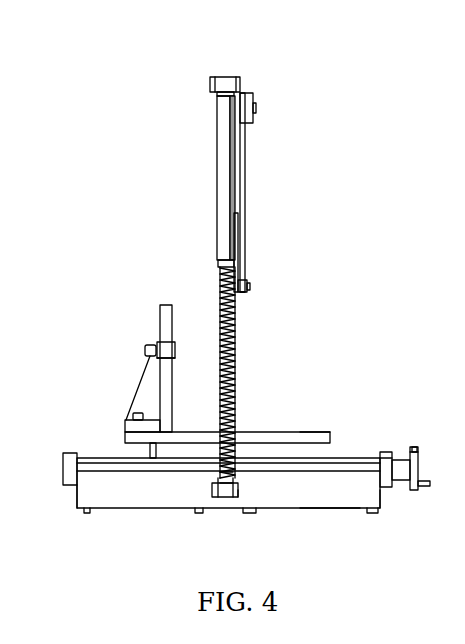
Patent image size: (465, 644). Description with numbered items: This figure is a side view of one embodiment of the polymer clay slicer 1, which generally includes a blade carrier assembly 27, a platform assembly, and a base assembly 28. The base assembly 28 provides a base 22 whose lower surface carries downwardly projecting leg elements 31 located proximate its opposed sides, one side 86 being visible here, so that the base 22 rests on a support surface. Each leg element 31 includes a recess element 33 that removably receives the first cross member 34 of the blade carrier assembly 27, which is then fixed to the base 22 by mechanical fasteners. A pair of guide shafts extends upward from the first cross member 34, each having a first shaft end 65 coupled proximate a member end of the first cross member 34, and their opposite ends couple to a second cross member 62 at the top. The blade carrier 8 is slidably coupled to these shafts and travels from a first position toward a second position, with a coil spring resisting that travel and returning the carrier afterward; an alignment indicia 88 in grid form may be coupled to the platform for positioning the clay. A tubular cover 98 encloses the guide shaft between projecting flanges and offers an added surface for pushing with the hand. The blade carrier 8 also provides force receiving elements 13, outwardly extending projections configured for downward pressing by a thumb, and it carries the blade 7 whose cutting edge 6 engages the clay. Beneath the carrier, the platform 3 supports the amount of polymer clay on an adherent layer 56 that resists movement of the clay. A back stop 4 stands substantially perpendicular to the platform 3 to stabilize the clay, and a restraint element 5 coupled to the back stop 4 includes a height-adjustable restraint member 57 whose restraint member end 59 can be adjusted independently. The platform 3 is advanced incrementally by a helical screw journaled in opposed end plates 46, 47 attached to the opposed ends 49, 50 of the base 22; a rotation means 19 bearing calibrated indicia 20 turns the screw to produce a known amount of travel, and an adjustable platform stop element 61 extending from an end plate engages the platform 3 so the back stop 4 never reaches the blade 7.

The polymer clay slicer 1 is at (106, 85).
The second cross member 62 is at (228, 77).
The blade carrier assembly 27 is at (258, 80).
The cover 98 is at (216, 150).
The blade carrier 8 is at (246, 160).
The force receiving elements 13 is at (451, 137).
The blade 7 is at (250, 284).
The cutting edge 6 is at (242, 294).
The alignment indicia 88 is at (446, 391).
The back stop 4 is at (167, 305).
The restraint element 5 is at (171, 346).
The restraint member 57 is at (176, 352).
The restraint member end 59 is at (155, 370).
The adherent layer 56 is at (284, 432).
The platform 3 is at (323, 432).
The base 22 is at (361, 509).
The side of the base 86 is at (330, 509).
The leg elements 31 is at (381, 508).
The end plate 47 is at (70, 453).
The end of the base 50 is at (77, 500).
The base assembly 28 is at (78, 503).
The first cross member 34 is at (228, 498).
The recess element 33 is at (250, 498).
The first shaft end 65 is at (218, 481).
The end plate 46 is at (386, 452).
The adjustable platform stop element 61 is at (380, 456).
The rotation means 19 is at (418, 470).
The calibrated indicia 20 is at (413, 447).
The end of the base 49 is at (382, 494).